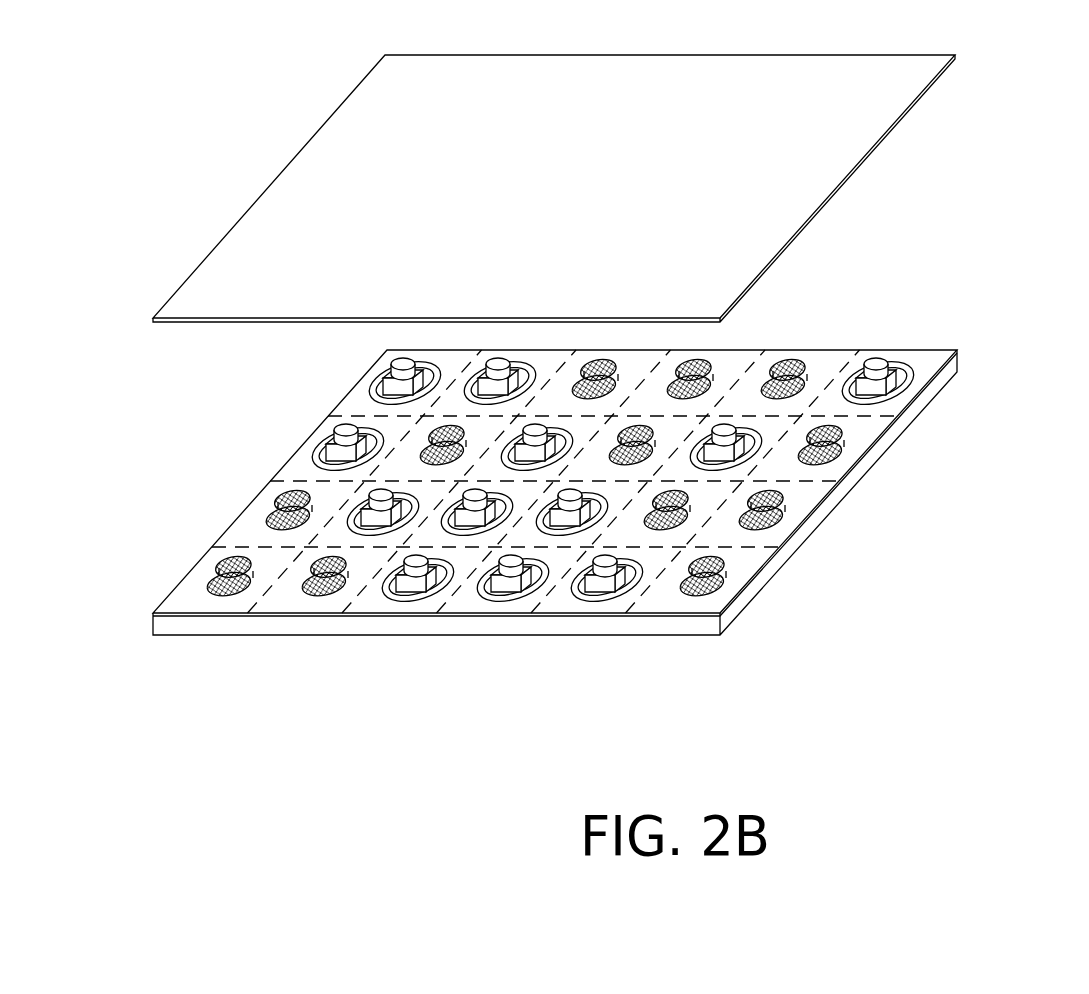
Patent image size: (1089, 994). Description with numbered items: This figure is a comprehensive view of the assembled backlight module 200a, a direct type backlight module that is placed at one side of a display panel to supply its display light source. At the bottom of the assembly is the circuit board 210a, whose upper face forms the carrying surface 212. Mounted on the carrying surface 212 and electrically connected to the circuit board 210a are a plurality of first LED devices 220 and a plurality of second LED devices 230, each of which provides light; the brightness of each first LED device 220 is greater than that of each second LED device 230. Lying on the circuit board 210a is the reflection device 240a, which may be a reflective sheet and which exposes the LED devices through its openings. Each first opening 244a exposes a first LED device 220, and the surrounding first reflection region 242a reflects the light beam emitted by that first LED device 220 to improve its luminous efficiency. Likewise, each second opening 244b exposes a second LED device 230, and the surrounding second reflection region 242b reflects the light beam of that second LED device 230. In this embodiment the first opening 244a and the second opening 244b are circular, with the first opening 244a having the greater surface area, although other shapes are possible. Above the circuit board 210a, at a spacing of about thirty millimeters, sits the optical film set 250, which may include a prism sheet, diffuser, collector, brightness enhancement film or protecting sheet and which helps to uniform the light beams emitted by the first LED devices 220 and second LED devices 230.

The backlight module 200a is at (999, 638).
The circuit board 210a is at (760, 585).
The carrying surface 212 is at (958, 352).
The first light emitting diode device 220 is at (600, 585).
The second light emitting diode device 230 is at (689, 594).
The reflection device 240a is at (852, 430).
The first reflection region 242a is at (424, 616).
The second reflection region 242b is at (237, 620).
The first opening 244a is at (398, 599).
The second opening 244b is at (224, 598).
The optical film set 250 is at (896, 105).